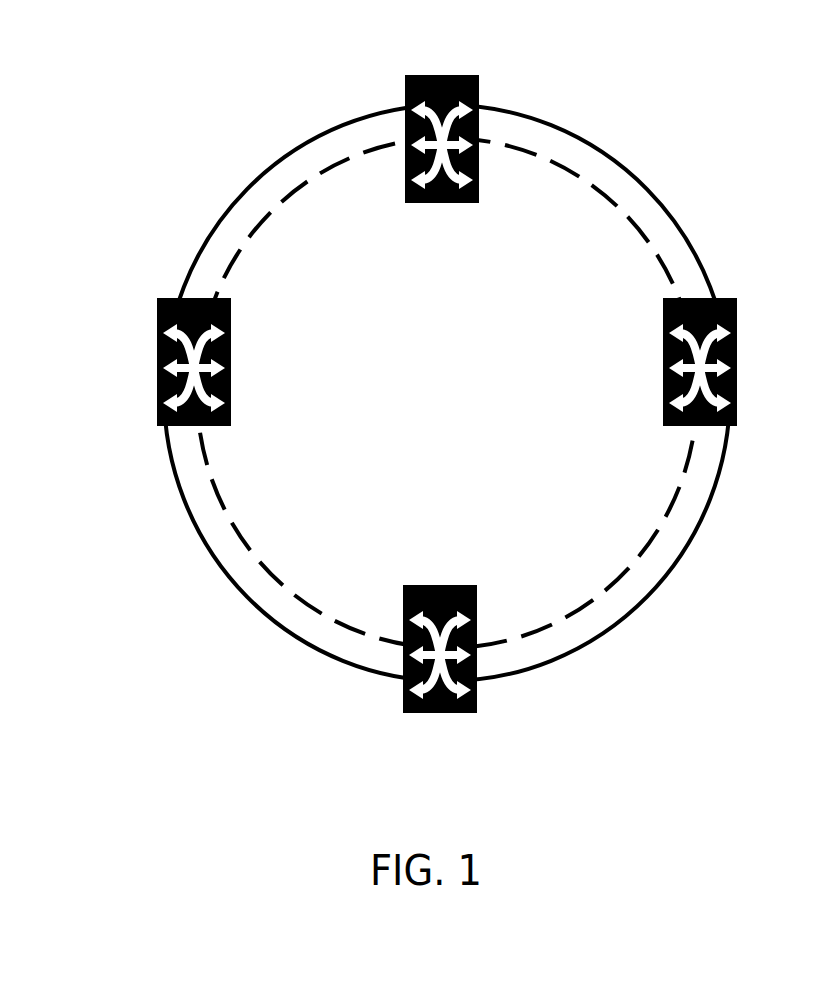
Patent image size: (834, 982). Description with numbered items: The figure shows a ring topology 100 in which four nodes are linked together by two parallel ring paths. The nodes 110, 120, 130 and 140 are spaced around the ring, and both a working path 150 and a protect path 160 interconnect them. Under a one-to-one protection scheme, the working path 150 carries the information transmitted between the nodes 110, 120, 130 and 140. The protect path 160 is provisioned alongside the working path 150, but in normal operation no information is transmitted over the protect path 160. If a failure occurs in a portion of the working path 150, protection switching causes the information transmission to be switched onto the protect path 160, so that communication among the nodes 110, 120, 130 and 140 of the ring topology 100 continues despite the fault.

The ring topology 100 is at (445, 402).
The node 110 is at (451, 75).
The node 120 is at (738, 368).
The node 130 is at (440, 712).
The node 140 is at (157, 367).
The working path 150 is at (643, 182).
The protect path 160 is at (592, 187).